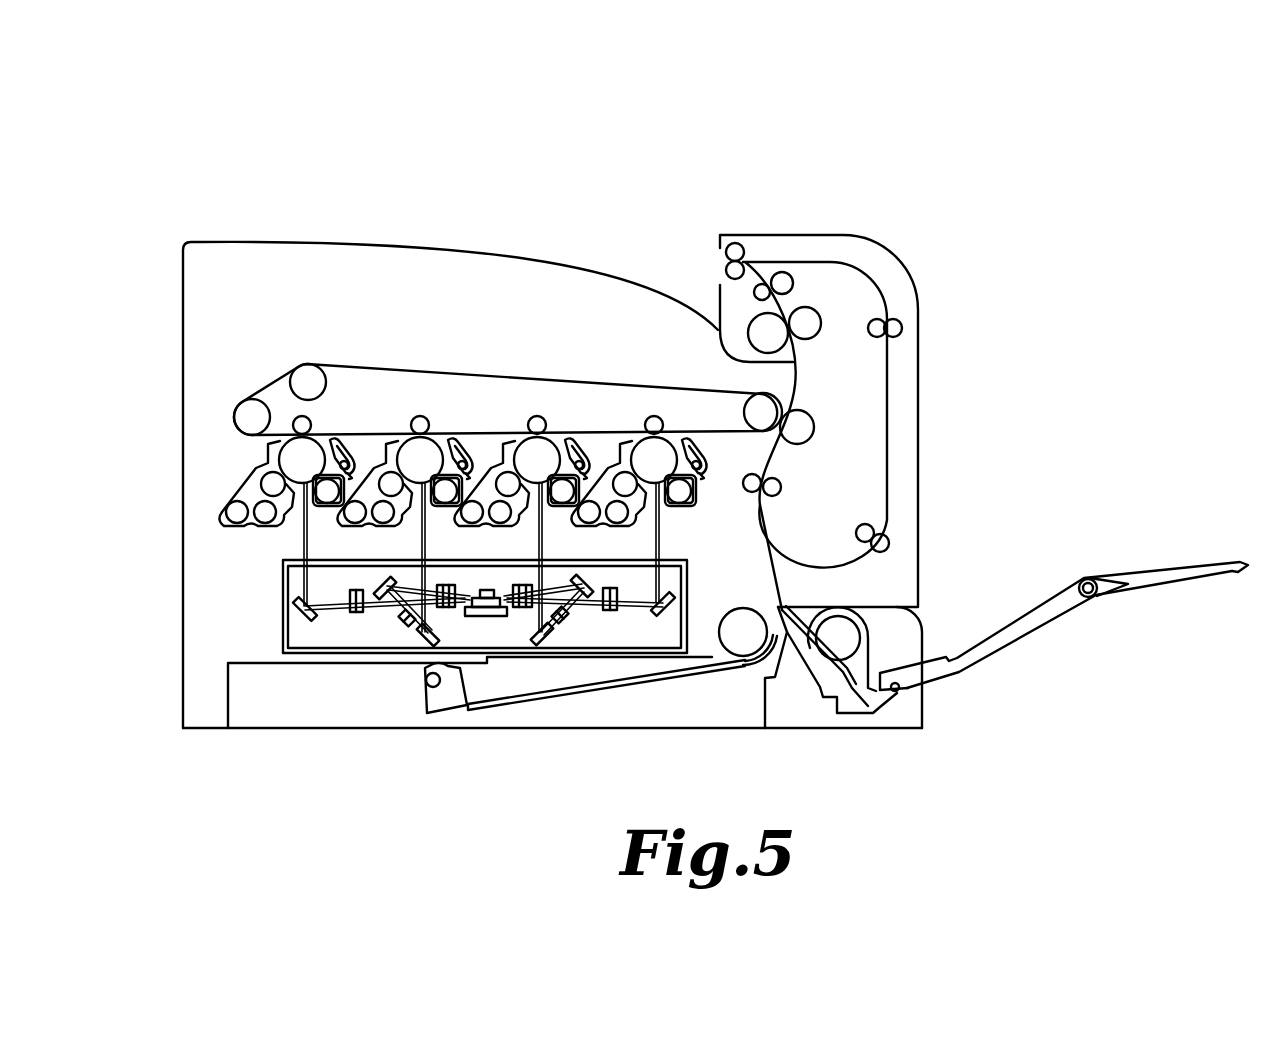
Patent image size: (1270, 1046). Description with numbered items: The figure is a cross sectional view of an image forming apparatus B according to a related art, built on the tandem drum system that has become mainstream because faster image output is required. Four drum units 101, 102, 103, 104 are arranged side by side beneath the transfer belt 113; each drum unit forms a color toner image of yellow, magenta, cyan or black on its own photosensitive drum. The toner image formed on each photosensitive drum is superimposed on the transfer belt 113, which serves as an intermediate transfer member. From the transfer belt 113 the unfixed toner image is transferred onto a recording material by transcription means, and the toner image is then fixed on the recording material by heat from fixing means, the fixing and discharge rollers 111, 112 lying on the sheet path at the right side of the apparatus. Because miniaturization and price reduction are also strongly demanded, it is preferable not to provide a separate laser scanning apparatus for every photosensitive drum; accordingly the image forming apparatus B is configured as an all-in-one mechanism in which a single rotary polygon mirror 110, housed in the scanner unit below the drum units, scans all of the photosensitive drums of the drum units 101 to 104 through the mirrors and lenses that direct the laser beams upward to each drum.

The drum unit 101 is at (662, 450).
The drum unit 102 is at (545, 452).
The drum unit 103 is at (430, 452).
The drum unit 104 is at (312, 454).
The rotary polygon mirror 110 is at (478, 615).
The fixing roller 111 is at (808, 322).
The paper discharge roller 112 is at (800, 428).
The transfer belt 113 is at (720, 393).
The image forming apparatus B is at (805, 175).